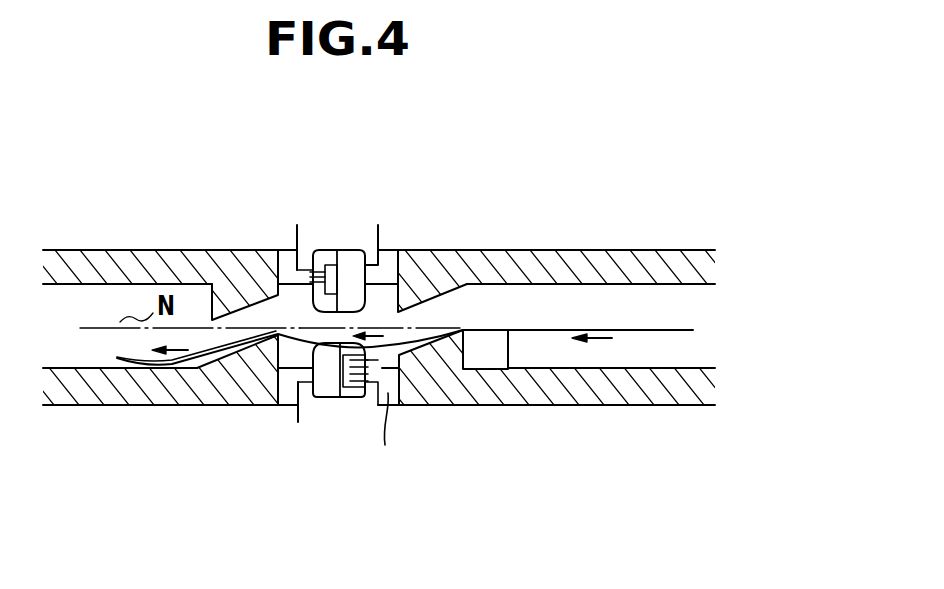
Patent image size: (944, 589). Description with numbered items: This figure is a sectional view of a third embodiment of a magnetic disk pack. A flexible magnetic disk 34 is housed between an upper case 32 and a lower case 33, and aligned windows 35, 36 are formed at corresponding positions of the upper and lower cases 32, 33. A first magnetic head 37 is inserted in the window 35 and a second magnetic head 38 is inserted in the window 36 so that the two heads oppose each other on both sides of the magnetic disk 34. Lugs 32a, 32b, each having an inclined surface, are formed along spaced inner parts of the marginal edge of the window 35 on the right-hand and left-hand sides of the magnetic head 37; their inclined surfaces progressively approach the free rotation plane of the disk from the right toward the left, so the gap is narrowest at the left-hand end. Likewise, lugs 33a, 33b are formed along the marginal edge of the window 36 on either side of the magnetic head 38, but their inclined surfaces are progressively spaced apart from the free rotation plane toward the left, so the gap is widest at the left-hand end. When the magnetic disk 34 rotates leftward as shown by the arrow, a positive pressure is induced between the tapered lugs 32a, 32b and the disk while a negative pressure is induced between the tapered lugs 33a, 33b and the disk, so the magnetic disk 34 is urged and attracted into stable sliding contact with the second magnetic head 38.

The upper case 32 is at (632, 250).
The lug 32a is at (452, 288).
The lug 32b is at (253, 295).
The lower case 33 is at (623, 405).
The lug 33a is at (433, 347).
The lug 33b is at (227, 360).
The flexible magnetic disk 34 is at (509, 369).
The window 35 is at (390, 265).
The window 36 is at (343, 433).
The first magnetic head 37 is at (355, 265).
The second magnetic head 38 is at (323, 385).